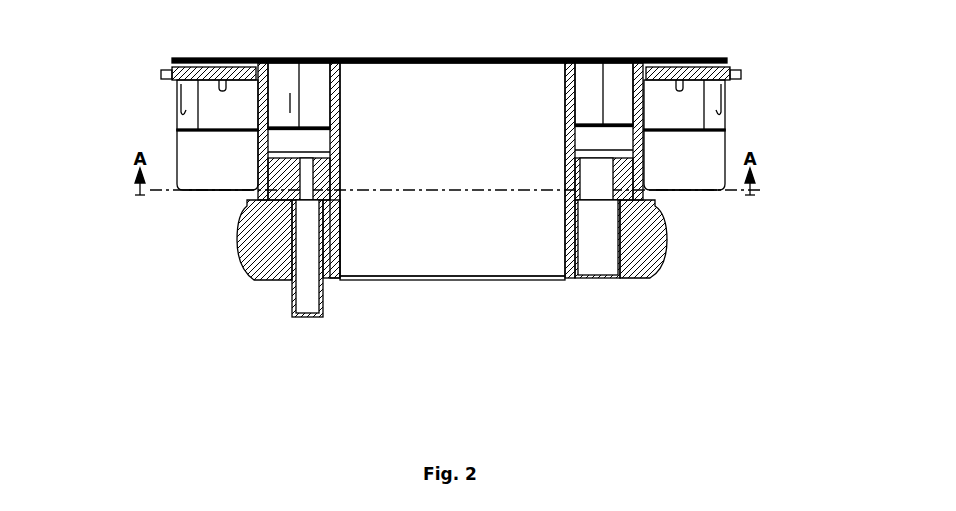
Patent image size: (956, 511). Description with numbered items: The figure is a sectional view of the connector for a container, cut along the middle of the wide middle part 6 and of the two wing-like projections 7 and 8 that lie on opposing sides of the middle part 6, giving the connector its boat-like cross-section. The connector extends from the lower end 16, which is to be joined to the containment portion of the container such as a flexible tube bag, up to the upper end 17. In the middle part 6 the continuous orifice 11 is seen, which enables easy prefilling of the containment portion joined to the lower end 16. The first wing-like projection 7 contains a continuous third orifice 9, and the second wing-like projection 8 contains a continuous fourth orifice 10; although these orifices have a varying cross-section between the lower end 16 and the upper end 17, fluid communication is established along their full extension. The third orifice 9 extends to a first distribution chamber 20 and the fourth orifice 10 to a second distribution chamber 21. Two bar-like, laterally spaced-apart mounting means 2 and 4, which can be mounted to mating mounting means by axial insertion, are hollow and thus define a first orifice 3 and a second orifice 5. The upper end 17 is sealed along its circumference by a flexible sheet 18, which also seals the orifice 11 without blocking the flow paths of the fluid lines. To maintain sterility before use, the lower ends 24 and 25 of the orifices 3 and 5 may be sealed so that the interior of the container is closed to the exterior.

The mounting means 2 is at (707, 184).
The first orifice 3 is at (688, 210).
The mounting means 4 is at (200, 158).
The second orifice 5 is at (224, 210).
The middle part 6 is at (484, 296).
The first wing-like projection 7 is at (630, 202).
The second wing-like projection 8 is at (280, 202).
The third orifice 9 is at (592, 279).
The fourth orifice 10 is at (313, 316).
The continuous orifice 11 is at (487, 107).
The lower end 16 is at (390, 280).
The upper end 17 is at (342, 62).
The flexible sheet 18 is at (490, 57).
The first distribution chamber 20 is at (600, 75).
The second distribution chamber 21 is at (308, 78).
The lower end of orifice 24 is at (703, 192).
The lower end of orifice 25 is at (203, 193).